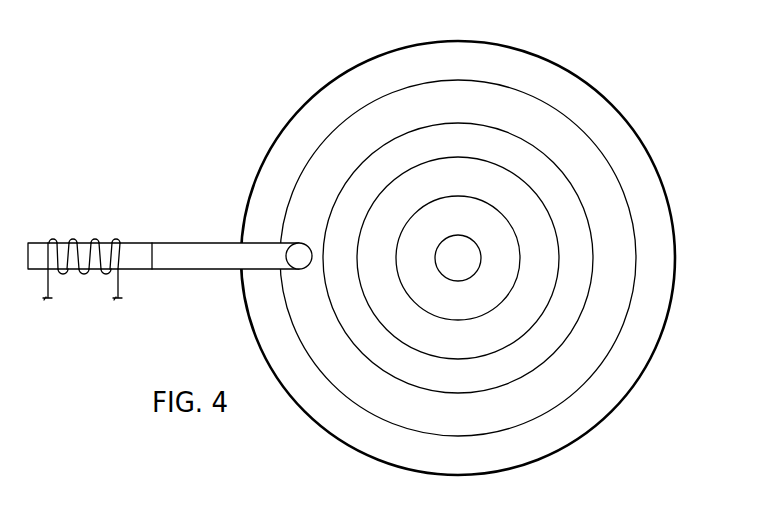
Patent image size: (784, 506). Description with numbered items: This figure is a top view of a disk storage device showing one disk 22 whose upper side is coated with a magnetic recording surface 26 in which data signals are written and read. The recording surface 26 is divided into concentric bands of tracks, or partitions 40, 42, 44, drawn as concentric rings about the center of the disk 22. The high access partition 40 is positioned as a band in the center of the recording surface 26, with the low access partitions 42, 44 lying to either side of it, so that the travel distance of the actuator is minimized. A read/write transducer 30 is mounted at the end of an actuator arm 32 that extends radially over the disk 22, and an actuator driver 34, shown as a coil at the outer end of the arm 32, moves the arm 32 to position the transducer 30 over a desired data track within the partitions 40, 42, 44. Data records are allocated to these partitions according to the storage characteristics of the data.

The disk 22 is at (458, 258).
The magnetic recording surface 26 is at (458, 258).
The read/write transducer 30 is at (303, 244).
The actuator arm 32 is at (183, 243).
The actuator driver 34 is at (80, 240).
The high access partition 40 is at (552, 324).
The low access partition 42 is at (540, 303).
The low access partition 44 is at (583, 349).